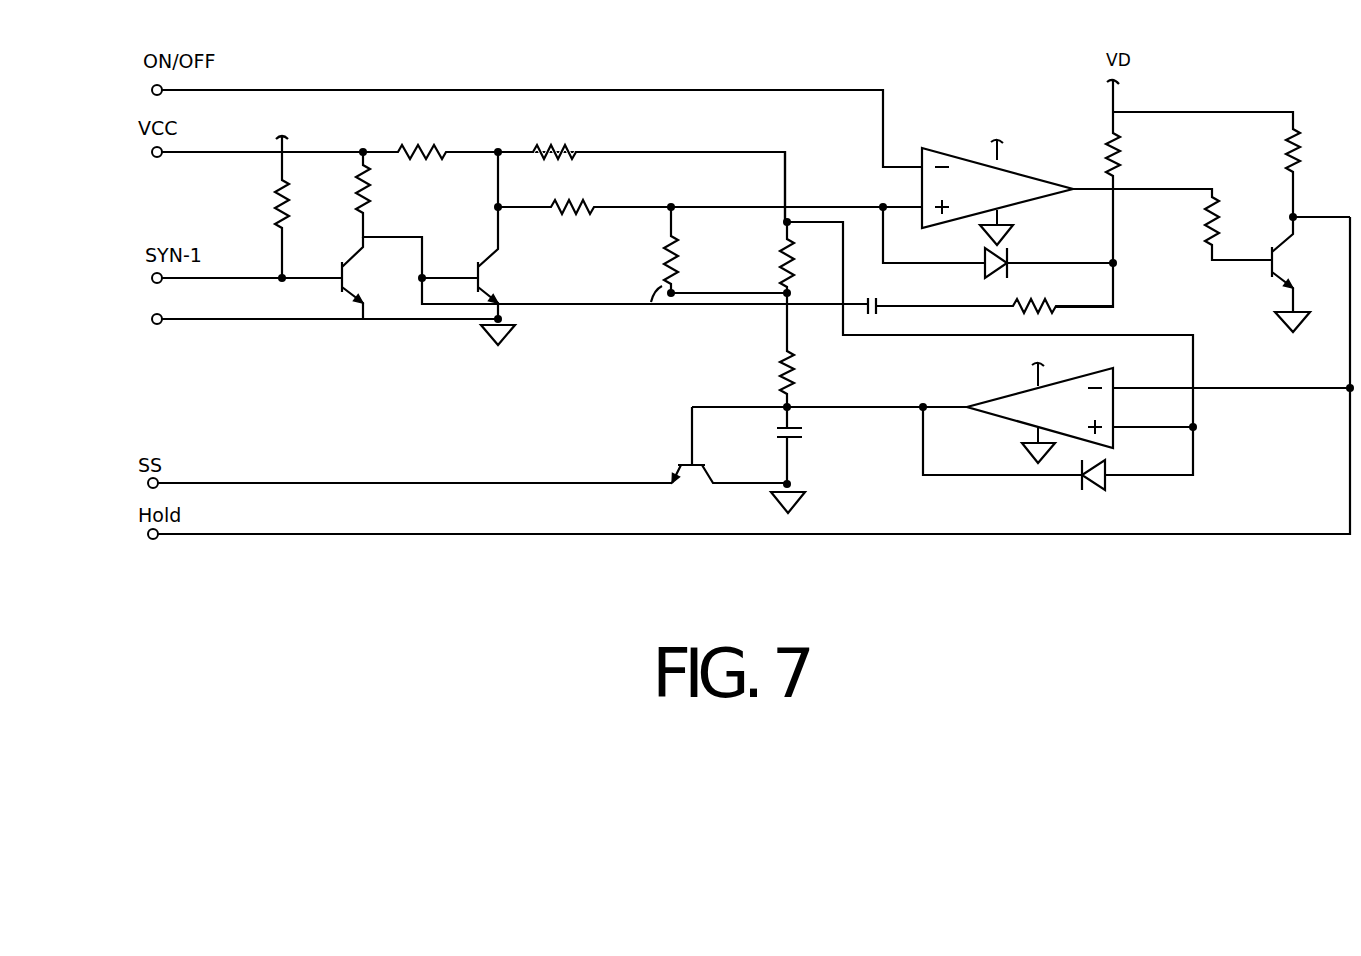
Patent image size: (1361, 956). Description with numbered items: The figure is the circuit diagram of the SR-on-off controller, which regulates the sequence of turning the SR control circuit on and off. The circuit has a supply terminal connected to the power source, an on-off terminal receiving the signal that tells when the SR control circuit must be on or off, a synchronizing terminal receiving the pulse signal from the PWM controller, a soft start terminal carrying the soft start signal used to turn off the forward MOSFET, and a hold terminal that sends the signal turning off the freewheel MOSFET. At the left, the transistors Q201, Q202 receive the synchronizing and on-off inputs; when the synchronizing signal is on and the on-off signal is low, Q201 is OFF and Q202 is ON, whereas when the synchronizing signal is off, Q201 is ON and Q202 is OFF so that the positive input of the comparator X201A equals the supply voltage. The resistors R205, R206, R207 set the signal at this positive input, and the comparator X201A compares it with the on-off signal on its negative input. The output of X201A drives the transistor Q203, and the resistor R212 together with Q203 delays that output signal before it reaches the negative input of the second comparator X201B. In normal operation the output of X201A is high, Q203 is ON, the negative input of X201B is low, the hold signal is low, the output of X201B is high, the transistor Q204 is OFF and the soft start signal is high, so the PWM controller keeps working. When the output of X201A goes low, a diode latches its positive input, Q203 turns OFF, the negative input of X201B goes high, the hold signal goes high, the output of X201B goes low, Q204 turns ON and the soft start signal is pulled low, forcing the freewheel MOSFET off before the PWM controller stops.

The transistor Q201 is at (374, 278).
The transistor Q202 is at (488, 263).
The transistor Q203 is at (1303, 274).
The transistor Q204 is at (725, 492).
The resistor R205 is at (569, 196).
The resistor R206 is at (629, 201).
The resistor R207 is at (811, 262).
The resistor R212 is at (1189, 221).
The comparator X201A is at (994, 201).
The comparator X201B is at (1039, 416).